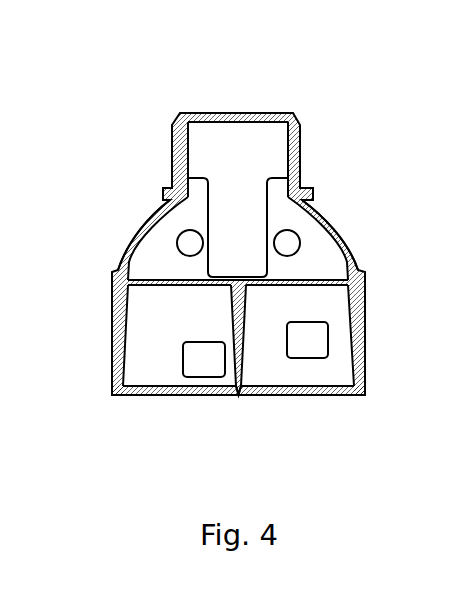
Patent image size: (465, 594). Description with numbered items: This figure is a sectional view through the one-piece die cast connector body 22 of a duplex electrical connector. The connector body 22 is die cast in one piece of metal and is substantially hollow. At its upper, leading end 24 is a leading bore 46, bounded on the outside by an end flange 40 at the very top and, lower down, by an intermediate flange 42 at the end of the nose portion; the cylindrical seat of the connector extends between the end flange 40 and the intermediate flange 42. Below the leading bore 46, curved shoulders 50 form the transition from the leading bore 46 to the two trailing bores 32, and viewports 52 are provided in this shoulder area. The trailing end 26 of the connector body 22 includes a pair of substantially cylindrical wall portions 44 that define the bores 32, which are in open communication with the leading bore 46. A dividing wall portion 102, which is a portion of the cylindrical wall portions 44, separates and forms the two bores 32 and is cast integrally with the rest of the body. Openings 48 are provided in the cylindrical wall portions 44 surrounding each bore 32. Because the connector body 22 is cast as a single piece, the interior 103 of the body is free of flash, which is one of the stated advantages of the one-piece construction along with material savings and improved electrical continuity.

The connector body 22 is at (103, 133).
The leading end 24 is at (212, 113).
The leading bore 46 is at (247, 131).
The end flange 40 is at (305, 126).
The intermediate flange 42 is at (313, 192).
The curved shoulders 50 is at (142, 222).
The interior 103 is at (163, 242).
The viewports 52 is at (287, 245).
The dividing wall portion 102 is at (246, 304).
The cylindrical wall portions 44 is at (113, 337).
The bores 32 is at (153, 370).
The openings 48 is at (205, 378).
The trailing end 26 is at (241, 396).